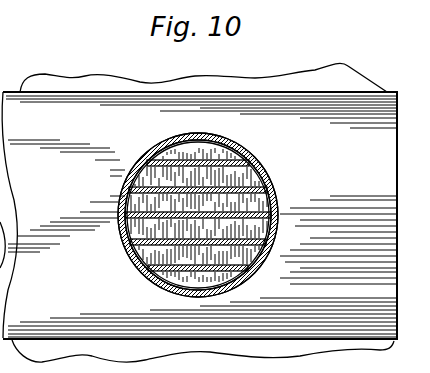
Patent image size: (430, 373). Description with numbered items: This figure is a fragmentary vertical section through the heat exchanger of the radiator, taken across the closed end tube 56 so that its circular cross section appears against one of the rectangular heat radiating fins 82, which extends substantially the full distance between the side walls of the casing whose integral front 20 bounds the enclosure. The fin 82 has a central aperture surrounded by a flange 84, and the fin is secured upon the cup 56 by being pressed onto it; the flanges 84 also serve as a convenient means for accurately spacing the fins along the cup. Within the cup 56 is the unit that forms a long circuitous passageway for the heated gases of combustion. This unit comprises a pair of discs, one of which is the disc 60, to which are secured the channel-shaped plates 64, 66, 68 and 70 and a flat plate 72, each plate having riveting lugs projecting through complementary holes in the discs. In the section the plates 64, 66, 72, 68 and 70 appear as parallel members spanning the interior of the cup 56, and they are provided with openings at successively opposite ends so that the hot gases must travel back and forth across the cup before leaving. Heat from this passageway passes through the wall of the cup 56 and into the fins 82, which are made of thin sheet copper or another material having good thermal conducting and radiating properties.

The front 20 is at (68, 82).
The heat radiating fins 82 is at (118, 104).
The flanges 84 is at (172, 140).
The channel-shaped plate 64 is at (262, 150).
The closed end tube 56 is at (152, 150).
The flat plate 72 is at (135, 214).
The channel-shaped plate 66 is at (242, 190).
The disc 60 is at (240, 213).
The channel-shaped plate 68 is at (140, 252).
The channel-shaped plate 70 is at (142, 273).